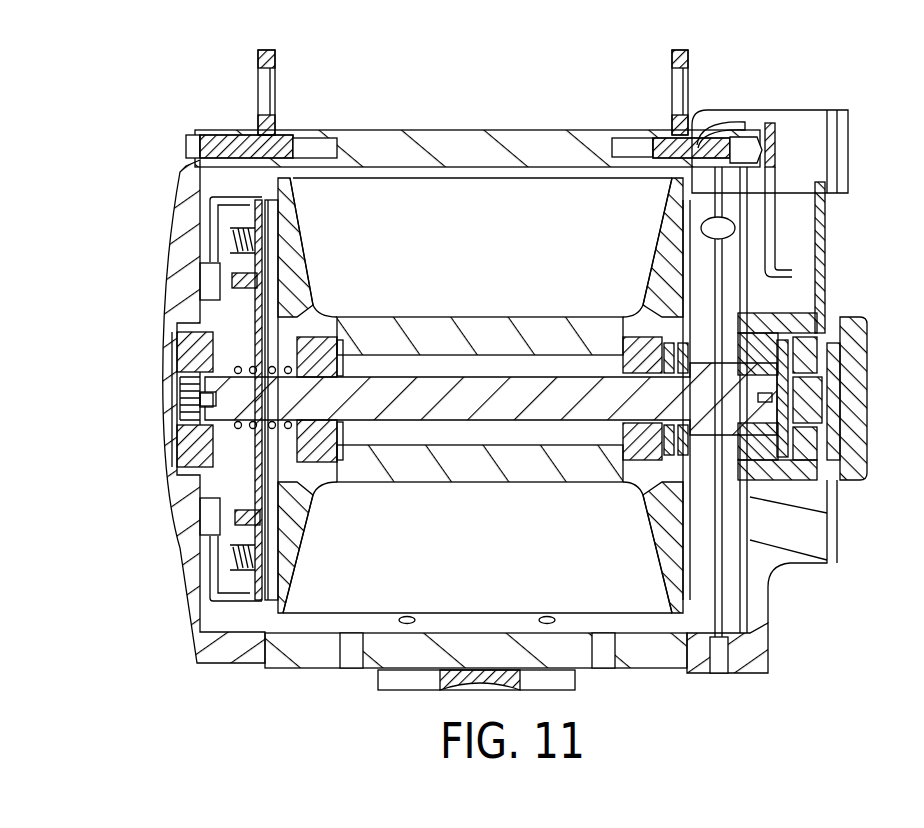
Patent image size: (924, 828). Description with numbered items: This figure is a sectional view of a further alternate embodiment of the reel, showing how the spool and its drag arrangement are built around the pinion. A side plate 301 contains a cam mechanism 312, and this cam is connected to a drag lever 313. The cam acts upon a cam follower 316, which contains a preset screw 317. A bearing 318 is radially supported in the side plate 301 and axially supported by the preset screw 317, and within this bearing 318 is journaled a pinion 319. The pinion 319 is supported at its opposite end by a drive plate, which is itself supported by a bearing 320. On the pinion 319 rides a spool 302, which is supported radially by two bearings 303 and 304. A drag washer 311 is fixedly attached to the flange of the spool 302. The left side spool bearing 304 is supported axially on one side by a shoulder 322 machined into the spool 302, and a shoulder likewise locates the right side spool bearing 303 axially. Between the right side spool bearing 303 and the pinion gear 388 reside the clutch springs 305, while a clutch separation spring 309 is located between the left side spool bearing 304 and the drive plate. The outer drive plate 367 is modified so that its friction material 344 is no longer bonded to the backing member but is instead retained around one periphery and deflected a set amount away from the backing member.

The side plate 301 is at (768, 623).
The spool 302 is at (443, 318).
The right side spool bearing 303 is at (640, 463).
The left side spool bearing 304 is at (323, 333).
The clutch springs 305 is at (672, 337).
The clutch separation spring 309 is at (240, 428).
The drag washer 311 is at (278, 237).
The cam mechanism 312 is at (793, 322).
The drag lever 313 is at (826, 250).
The cam follower 316 is at (748, 328).
The preset screw 317 is at (803, 340).
The bearing 318 is at (767, 457).
The pinion 319 is at (430, 425).
The bearing 320 is at (192, 332).
The shoulder 322 is at (340, 340).
The friction material 344 is at (260, 207).
The outer drive plate 367 is at (205, 258).
The pinion gear 388 is at (692, 438).